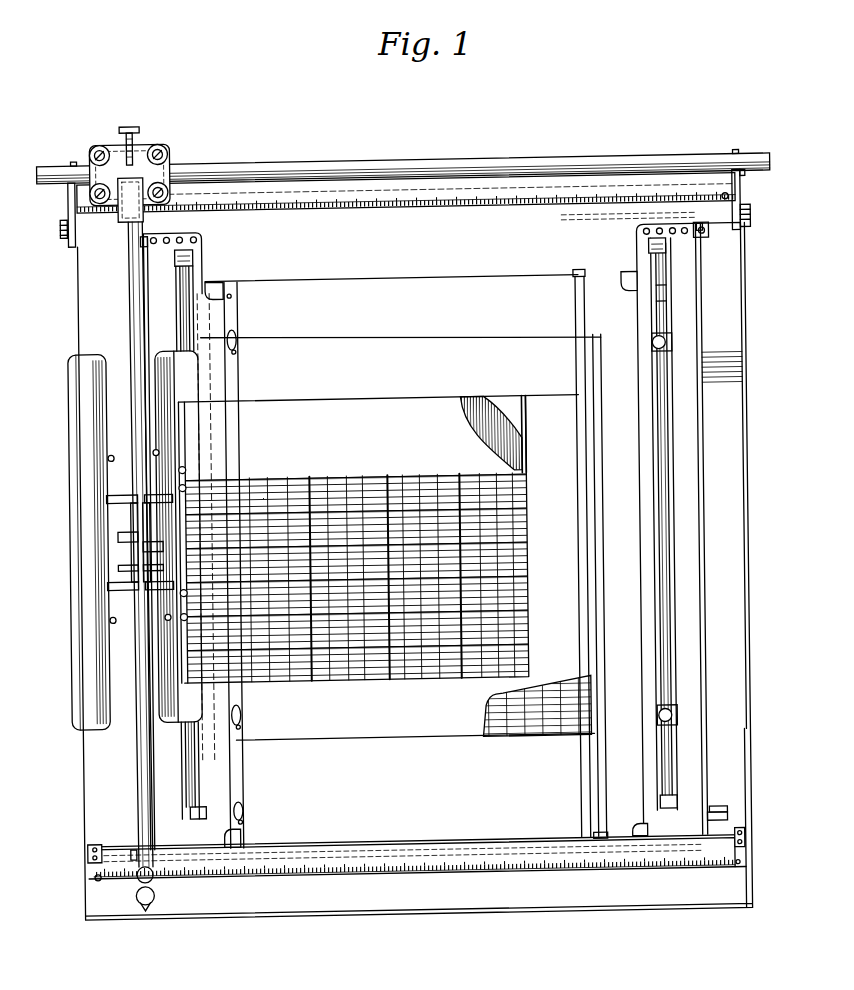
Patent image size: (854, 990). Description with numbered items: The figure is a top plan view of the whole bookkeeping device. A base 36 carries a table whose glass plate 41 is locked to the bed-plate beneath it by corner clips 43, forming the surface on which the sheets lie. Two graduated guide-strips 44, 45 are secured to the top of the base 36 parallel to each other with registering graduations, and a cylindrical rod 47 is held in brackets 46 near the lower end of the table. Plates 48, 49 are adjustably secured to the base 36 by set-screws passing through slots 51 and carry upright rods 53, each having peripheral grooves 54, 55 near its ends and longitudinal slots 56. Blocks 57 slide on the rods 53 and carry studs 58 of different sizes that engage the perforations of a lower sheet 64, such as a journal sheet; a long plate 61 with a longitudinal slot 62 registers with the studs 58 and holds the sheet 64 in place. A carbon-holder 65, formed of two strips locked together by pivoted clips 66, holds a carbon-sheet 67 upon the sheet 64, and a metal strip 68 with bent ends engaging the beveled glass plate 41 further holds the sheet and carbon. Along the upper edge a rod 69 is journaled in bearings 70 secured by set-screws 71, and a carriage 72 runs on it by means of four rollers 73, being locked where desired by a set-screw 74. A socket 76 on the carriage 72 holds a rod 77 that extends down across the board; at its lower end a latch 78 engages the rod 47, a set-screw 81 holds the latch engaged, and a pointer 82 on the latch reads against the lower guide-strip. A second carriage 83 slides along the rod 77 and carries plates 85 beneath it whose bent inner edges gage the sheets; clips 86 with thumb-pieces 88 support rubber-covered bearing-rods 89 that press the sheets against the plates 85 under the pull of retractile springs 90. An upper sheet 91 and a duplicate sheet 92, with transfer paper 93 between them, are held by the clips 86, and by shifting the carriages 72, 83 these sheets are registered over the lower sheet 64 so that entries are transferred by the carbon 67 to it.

The base 36 is at (435, 928).
The glass plate 41 is at (415, 763).
The corner clips 43 is at (226, 284).
The graduated guide-strip 44 is at (541, 876).
The graduated guide-strip 45 is at (470, 206).
The brackets 46 is at (84, 846).
The rod 47 is at (381, 846).
The plate 48 is at (724, 815).
The plate 49 is at (712, 240).
The slots 51 is at (144, 240).
The rods 53 is at (192, 318).
The peripheral groove 54 is at (203, 808).
The peripheral groove 55 is at (185, 259).
The longitudinal slots 56 is at (669, 300).
The blocks 57 is at (674, 336).
The studs 58 is at (668, 345).
The long plate 61 is at (752, 447).
The longitudinal slot 62 is at (180, 262).
The sheet of paper 64 is at (568, 722).
The carbon-holder 65 is at (240, 317).
The clips 66 is at (240, 342).
The carbon-sheet 67 is at (397, 357).
The metal strip 68 is at (592, 808).
The rod 69 is at (368, 160).
The bearings 70 is at (41, 160).
The set-screws 71 is at (64, 228).
The carriage 72 is at (146, 164).
The rollers 73 is at (103, 140).
The set-screw 74 is at (137, 124).
The socket 76 is at (128, 206).
The rod 77 is at (132, 330).
The latch 78 is at (128, 856).
The set-screw 81 is at (134, 876).
The pointer 82 is at (152, 900).
The carriage 83 is at (183, 520).
The plates 85 is at (70, 386).
The clips 86 is at (107, 494).
The thumb-pieces 88 is at (118, 530).
The bearing-rods 89 is at (95, 427).
The retractile springs 90 is at (109, 453).
The upper sheet 91 is at (354, 540).
The duplicate sheet 92 is at (522, 398).
The transfer paper 93 is at (474, 400).